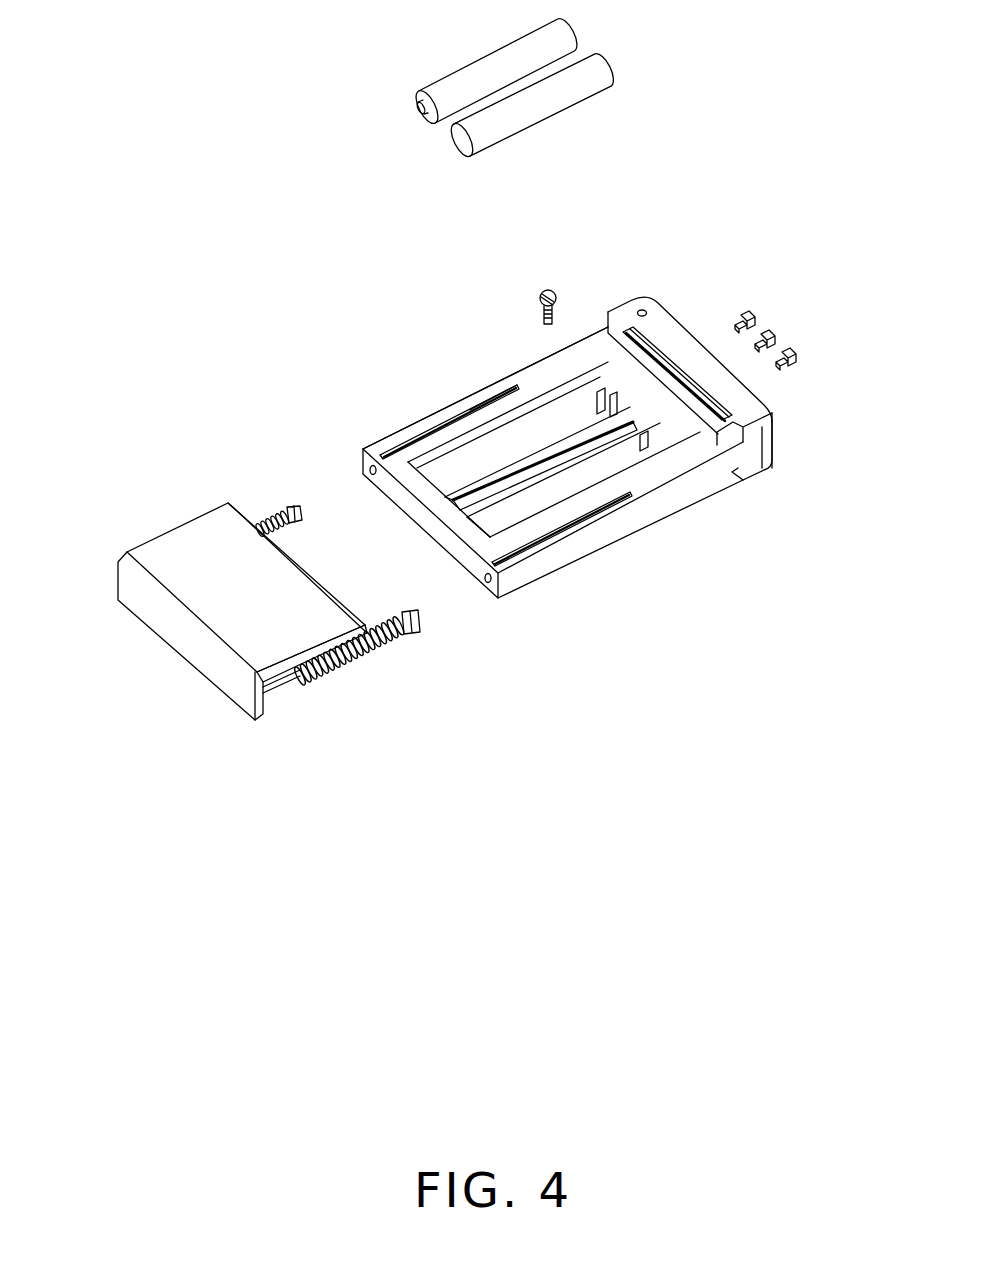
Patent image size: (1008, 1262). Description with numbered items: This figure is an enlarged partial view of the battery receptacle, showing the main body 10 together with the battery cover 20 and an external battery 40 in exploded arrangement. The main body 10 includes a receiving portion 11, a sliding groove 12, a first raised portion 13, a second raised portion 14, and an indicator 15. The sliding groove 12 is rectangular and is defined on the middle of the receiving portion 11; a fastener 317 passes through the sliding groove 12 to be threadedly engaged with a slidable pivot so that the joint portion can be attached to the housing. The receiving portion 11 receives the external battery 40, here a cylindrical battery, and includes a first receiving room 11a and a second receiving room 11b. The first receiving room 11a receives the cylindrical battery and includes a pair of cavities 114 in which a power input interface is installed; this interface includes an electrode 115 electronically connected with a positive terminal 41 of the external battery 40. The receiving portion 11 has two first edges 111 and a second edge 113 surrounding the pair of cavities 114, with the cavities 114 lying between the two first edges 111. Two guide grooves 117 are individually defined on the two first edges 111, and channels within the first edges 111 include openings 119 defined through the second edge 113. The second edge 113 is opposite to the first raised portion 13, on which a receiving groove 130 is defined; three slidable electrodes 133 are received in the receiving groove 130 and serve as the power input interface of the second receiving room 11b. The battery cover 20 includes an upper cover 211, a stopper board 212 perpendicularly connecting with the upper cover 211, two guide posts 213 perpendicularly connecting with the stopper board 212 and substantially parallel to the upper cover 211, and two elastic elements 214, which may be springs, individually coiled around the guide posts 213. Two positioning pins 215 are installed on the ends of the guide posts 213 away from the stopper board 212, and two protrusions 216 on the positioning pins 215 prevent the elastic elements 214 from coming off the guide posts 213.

The main body 10 is at (424, 306).
The receiving portion 11 is at (800, 526).
The first receiving room 11a is at (670, 433).
The second receiving room 11b is at (665, 472).
The first edges 111 is at (642, 483).
The second edge 113 is at (468, 530).
The cavities 114 is at (532, 495).
The electrode 115 is at (553, 455).
The guide grooves 117 is at (432, 423).
The openings 119 is at (488, 584).
The sliding groove 12 is at (497, 392).
The first raised portion 13 is at (838, 248).
The receiving slot 130 is at (645, 358).
The contact terminals 133 is at (760, 317).
The second raised portion 14 is at (752, 478).
The indicator 15 is at (642, 310).
The battery cover 20 is at (214, 721).
The upper cover 211 is at (200, 548).
The stopper board 212 is at (180, 637).
The guide posts 213 is at (285, 683).
The elastic elements 214 is at (370, 645).
The positioning pins 215 is at (292, 506).
The protrusions 216 is at (262, 524).
The fastener 317 is at (545, 288).
The external battery 40 is at (480, 76).
The positive terminal 41 is at (418, 108).